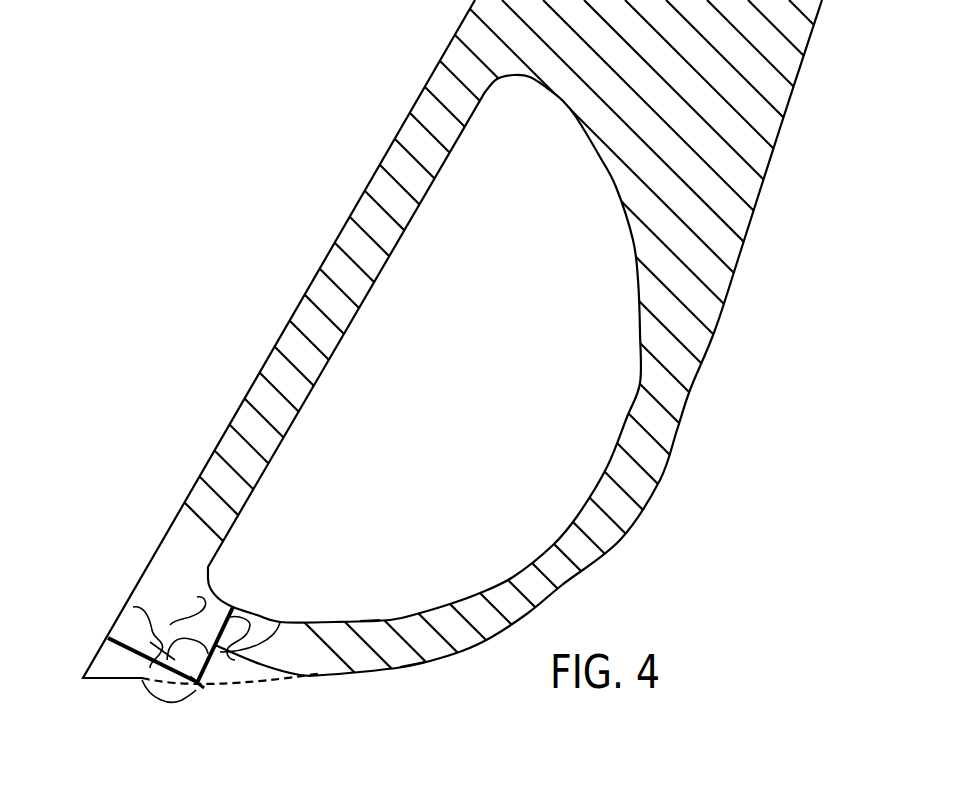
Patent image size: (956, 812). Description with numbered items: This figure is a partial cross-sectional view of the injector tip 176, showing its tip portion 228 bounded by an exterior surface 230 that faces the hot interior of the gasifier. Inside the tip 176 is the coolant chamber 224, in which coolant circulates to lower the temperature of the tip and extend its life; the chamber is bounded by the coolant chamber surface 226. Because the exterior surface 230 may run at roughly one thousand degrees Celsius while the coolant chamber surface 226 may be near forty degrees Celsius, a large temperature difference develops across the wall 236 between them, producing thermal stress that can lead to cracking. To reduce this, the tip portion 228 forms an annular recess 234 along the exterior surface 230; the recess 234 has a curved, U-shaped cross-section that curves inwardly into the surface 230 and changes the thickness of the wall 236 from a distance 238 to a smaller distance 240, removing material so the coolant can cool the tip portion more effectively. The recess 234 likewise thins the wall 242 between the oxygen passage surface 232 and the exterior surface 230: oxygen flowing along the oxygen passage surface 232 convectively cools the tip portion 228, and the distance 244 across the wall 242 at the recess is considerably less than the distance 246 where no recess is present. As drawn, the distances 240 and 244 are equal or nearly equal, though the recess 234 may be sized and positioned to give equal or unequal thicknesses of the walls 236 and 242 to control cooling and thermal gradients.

The injector tip 176 is at (790, 221).
The coolant chamber 224 is at (540, 194).
The coolant chamber surface 226 is at (368, 619).
The tip portion 228 is at (120, 740).
The exterior surface 230 is at (413, 668).
The oxygen passage surface 232 is at (155, 612).
The annular recess 234 is at (211, 711).
The wall 236 is at (252, 622).
The distance 238 is at (186, 628).
The distance 240 is at (280, 623).
The wall 242 is at (150, 642).
The distance 244 is at (147, 603).
The distance 246 is at (138, 681).